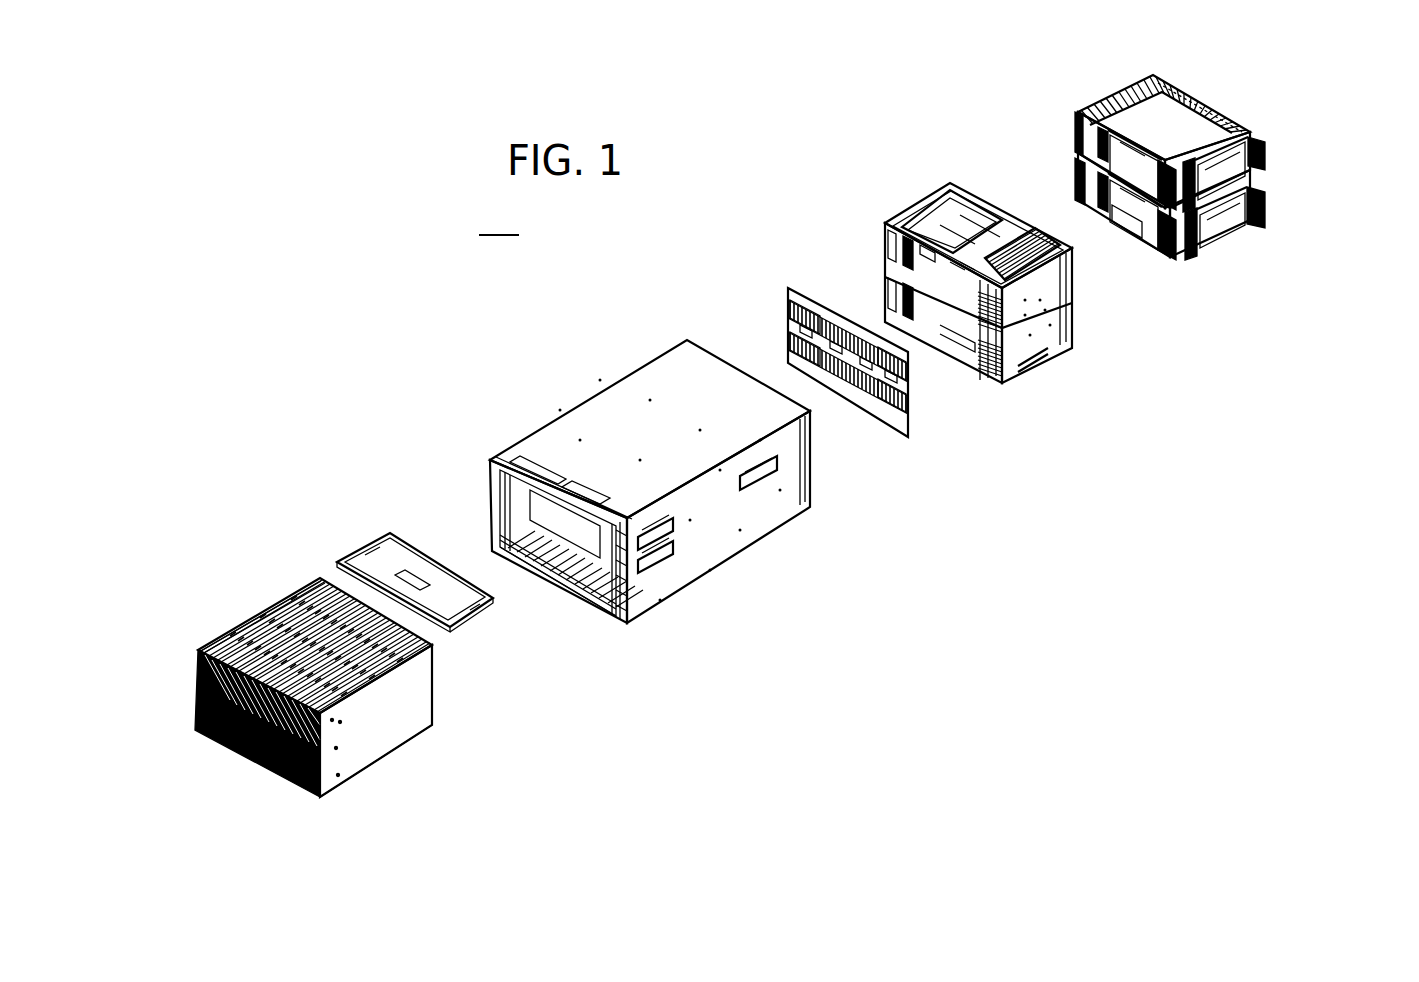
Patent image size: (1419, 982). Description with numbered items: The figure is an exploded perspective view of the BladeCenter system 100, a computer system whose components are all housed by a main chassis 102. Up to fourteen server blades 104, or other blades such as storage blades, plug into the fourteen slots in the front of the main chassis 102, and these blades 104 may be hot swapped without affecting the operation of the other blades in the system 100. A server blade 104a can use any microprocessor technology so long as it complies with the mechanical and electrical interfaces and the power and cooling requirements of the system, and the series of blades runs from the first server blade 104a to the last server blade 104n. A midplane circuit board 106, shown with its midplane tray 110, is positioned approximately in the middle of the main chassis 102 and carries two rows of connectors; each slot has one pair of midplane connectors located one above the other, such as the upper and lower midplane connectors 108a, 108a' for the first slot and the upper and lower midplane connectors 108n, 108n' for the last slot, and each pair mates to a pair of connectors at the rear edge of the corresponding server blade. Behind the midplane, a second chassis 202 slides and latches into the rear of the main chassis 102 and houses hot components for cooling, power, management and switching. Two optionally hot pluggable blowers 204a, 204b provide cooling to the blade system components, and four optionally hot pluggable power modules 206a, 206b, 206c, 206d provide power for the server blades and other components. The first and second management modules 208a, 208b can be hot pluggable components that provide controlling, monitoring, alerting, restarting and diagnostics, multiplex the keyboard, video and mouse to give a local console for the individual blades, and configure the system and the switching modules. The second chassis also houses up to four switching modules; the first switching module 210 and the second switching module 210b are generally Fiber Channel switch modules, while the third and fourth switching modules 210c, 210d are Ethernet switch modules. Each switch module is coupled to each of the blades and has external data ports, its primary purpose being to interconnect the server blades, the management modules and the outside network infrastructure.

The BladeCenter system 100 is at (499, 221).
The main chassis 102 is at (570, 412).
The server blades 104 is at (227, 740).
The server blade 104a is at (263, 617).
The server blade 104n is at (355, 743).
The midplane circuit board 106 is at (790, 288).
The midplane connector 108a is at (710, 279).
The midplane connector 108a' is at (726, 319).
The midplane connector 108n is at (1021, 383).
The midplane connector 108n' is at (970, 431).
The midplane tray MT 110 is at (367, 542).
The second chassis 202 is at (920, 207).
The blower 204a is at (1200, 110).
The blower 204b is at (1117, 215).
The power module 206a is at (1163, 78).
The power module 206b is at (1083, 203).
The power module 206c is at (1238, 120).
The power module 206d is at (1163, 247).
The management module 208a is at (1150, 75).
The management module 208b is at (1077, 160).
The switching module 210 is at (1253, 127).
The switching module 210b is at (1263, 152).
The switching module 210c is at (1175, 262).
The switching module 210d is at (1238, 218).